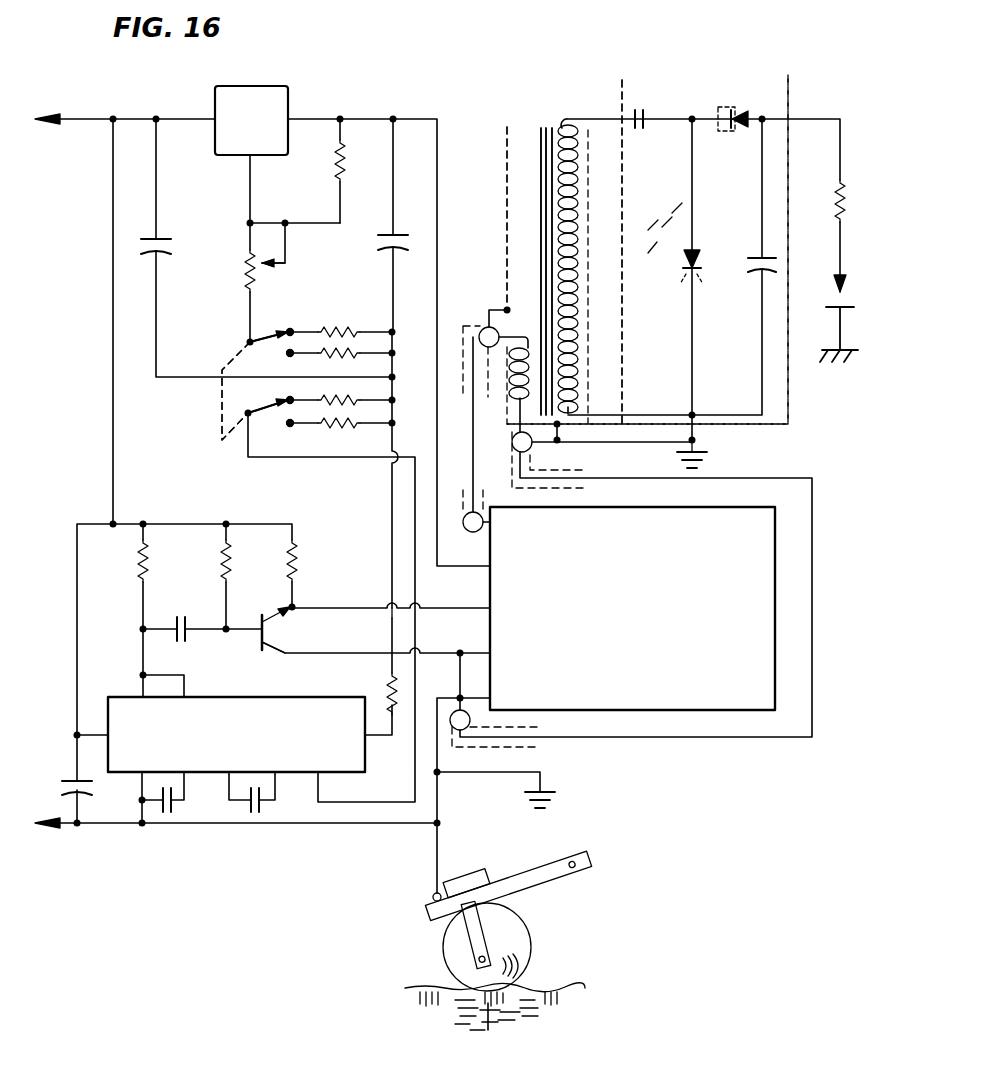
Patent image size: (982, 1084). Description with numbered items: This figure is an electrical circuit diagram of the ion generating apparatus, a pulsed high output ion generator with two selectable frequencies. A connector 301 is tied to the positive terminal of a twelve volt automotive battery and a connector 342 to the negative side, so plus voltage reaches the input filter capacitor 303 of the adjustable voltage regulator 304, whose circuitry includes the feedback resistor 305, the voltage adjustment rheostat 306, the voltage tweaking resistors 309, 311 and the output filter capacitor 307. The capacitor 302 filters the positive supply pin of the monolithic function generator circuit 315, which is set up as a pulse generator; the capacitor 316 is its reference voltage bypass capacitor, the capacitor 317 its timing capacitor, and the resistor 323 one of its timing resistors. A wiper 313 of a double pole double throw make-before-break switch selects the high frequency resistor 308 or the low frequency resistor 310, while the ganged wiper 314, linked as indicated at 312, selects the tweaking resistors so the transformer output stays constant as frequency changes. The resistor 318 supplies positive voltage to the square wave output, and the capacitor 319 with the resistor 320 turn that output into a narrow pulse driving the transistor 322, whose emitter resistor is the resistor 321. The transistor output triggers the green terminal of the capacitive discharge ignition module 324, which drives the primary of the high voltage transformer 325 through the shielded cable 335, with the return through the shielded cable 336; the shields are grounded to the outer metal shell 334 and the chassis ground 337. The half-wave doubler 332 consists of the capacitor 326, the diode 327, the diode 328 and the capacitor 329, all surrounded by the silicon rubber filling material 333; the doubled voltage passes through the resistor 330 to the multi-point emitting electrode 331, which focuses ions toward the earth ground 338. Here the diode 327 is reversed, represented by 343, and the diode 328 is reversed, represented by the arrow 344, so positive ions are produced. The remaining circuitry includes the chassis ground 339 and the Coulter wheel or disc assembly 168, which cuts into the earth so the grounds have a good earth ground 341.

The Coulter wheel or disc assembly 168 is at (516, 945).
The connector 301 is at (52, 123).
The capacitor 302 is at (72, 781).
The input filter capacitor 303 is at (161, 242).
The adjustable voltage regulator 304 is at (215, 135).
The feedback resistor 305 is at (337, 166).
The voltage adjustment rheostat 306 is at (248, 269).
The output filter capacitor 307 is at (390, 252).
The resistor 308 is at (331, 423).
The voltage tweaking resistor 309 is at (335, 353).
The resistor 310 is at (331, 400).
The voltage tweaking resistor 311 is at (340, 332).
The ganging indication 312 is at (222, 407).
The switch wiper 313 is at (260, 414).
The wiper 314 is at (259, 340).
The monolithic function generator circuit 315 is at (123, 751).
The reference voltage bypass capacitor 316 is at (176, 804).
The timing capacitor 317 is at (264, 804).
The resistor 318 is at (142, 560).
The capacitor 319 is at (186, 635).
The resistor 320 is at (225, 560).
The emitter resistor 321 is at (291, 565).
The transistor 322 is at (270, 641).
The timing resistor 323 is at (383, 687).
The capacitive discharge ignition module 324 is at (630, 688).
The high voltage transformer 325 is at (553, 122).
The capacitor 326 is at (643, 118).
The diode 327 is at (737, 112).
The diode 328 is at (694, 245).
The capacitor 329 is at (760, 275).
The resistor 330 is at (840, 214).
The multi-point emitting electrode 331 is at (838, 278).
The high voltage half-wave doubler 332 is at (790, 121).
The silicon rubber filling material 333 is at (665, 216).
The outer metal shell 334 is at (507, 170).
The shielded cable 335 is at (484, 325).
The shielded cable 336 is at (534, 447).
The chassis ground 337 is at (700, 446).
The earth ground 338 is at (841, 312).
The chassis ground 339 is at (546, 784).
The earth ground 341 is at (505, 1025).
The connector 342 is at (45, 828).
The reversed diode representation 343 is at (720, 106).
The arrow 344 is at (689, 282).